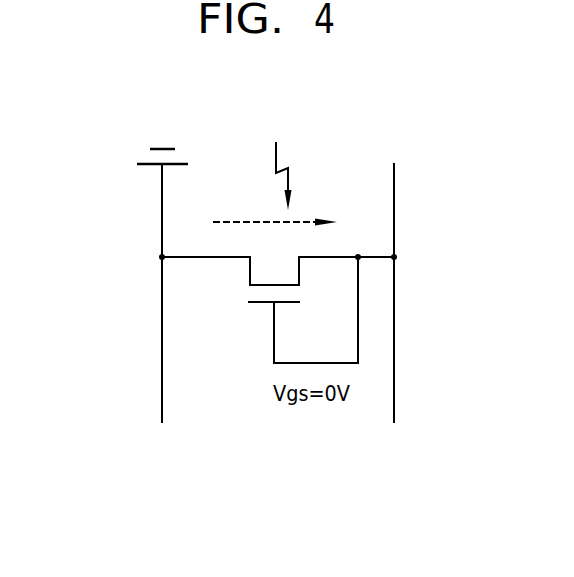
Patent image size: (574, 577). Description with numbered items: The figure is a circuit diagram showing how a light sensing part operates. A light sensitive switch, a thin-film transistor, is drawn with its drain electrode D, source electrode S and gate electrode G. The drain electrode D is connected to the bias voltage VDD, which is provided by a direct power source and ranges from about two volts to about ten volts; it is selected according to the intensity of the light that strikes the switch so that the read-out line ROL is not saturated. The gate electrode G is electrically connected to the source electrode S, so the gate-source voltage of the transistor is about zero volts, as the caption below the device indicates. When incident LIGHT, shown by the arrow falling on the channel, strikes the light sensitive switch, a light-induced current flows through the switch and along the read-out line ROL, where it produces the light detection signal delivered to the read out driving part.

The bias voltage VDD is at (162, 268).
The incident light LIGHT is at (275, 169).
The read-out line ROL is at (394, 278).
The drain electrode D is at (218, 276).
The source electrode S is at (334, 276).
The gate electrode G is at (303, 310).